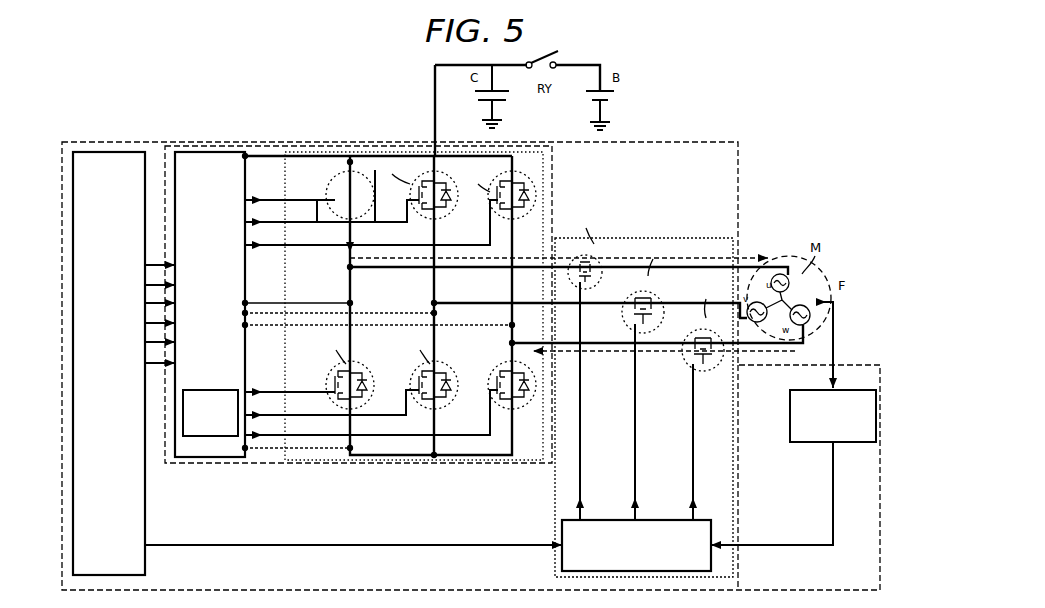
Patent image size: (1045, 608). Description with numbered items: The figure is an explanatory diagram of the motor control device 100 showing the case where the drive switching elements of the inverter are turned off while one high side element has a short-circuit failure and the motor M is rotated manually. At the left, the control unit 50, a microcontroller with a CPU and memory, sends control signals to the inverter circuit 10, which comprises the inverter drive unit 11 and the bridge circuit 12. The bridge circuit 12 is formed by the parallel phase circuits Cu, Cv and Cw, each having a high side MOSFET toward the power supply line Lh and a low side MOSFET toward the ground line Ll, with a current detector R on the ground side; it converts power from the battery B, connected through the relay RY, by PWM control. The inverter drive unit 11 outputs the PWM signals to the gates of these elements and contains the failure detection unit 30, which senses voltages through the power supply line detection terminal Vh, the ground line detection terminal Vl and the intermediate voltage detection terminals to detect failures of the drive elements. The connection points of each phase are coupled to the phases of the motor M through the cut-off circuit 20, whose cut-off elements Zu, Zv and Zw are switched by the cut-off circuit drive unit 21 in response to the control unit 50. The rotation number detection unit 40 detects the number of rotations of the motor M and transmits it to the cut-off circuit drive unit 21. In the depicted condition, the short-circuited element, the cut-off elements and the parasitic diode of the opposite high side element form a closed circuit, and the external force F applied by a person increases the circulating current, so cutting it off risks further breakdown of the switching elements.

The motor control device 100 is at (698, 142).
The control unit 50 is at (108, 152).
The inverter circuit 10 is at (305, 464).
The inverter drive unit 11 is at (211, 458).
The bridge circuit 12 is at (346, 462).
The failure detection unit 30 is at (210, 436).
The cut-off circuit 20 is at (688, 238).
The cut-off circuit drive unit 21 is at (603, 520).
The rotation number detection unit 40 is at (800, 443).